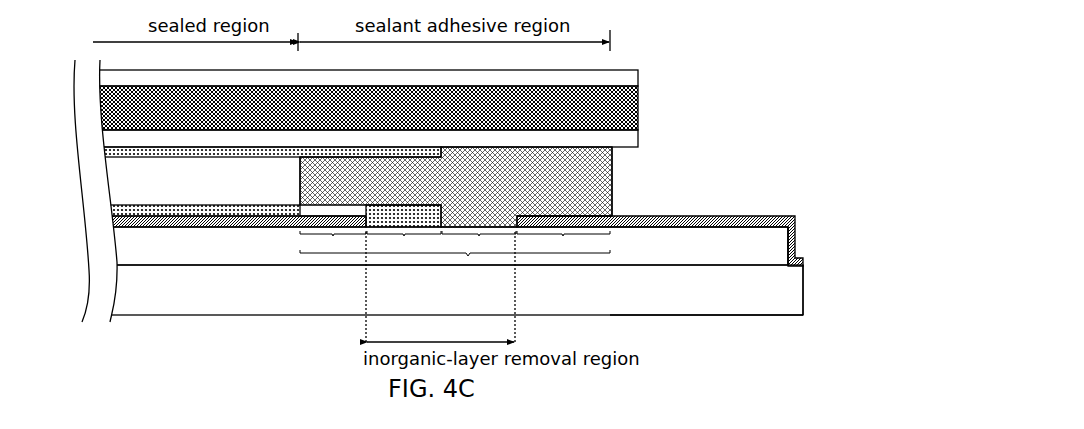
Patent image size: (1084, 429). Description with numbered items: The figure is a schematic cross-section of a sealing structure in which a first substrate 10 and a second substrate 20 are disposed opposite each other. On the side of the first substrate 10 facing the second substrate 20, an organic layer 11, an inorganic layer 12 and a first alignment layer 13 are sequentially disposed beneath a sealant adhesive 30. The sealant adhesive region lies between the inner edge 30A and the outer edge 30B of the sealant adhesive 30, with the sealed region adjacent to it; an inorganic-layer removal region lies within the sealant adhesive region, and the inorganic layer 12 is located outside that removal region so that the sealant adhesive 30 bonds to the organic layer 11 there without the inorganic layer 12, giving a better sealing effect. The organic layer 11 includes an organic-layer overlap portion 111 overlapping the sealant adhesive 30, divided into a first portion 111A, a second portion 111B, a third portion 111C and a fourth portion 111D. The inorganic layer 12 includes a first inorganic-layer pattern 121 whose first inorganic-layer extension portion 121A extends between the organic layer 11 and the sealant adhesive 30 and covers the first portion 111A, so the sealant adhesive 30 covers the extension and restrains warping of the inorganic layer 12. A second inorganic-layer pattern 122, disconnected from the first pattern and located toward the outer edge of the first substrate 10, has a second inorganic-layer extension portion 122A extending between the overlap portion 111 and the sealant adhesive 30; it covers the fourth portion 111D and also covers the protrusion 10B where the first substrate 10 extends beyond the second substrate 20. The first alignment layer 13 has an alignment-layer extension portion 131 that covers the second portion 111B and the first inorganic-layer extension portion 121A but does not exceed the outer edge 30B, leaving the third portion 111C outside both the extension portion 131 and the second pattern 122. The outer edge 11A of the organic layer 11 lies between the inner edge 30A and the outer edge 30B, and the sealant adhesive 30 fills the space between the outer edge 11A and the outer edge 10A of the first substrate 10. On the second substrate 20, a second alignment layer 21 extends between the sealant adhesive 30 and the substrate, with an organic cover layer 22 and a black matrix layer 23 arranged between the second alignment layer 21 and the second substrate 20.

The first substrate 10 is at (277, 316).
The outer edge of the first substrate 10A is at (803, 313).
The protrusion 10B is at (803, 325).
The organic layer 11 is at (130, 253).
The outer edge of the organic layer 11A is at (796, 246).
The organic-layer overlap portion 111 is at (455, 257).
The first portion 111A is at (333, 239).
The second portion 111B is at (404, 239).
The third portion 111C is at (479, 239).
The fourth portion 111D is at (563, 239).
The inorganic layer 12 is at (423, 217).
The first inorganic-layer pattern 121 is at (115, 224).
The first inorganic-layer extension portion 121A is at (339, 214).
The second inorganic-layer pattern 122 is at (765, 216).
The second inorganic-layer extension portion 122A is at (574, 216).
The first alignment layer 13 is at (115, 211).
The alignment-layer extension portion 131 is at (444, 214).
The second substrate 20 is at (612, 78).
The second alignment layer 21 is at (115, 150).
The organic cover layer 22 is at (620, 137).
The black matrix layer 23 is at (628, 105).
The sealant adhesive 30 is at (592, 162).
The inner edge of the sealant adhesive 30A is at (299, 157).
The outer edge of the sealant adhesive 30B is at (612, 175).